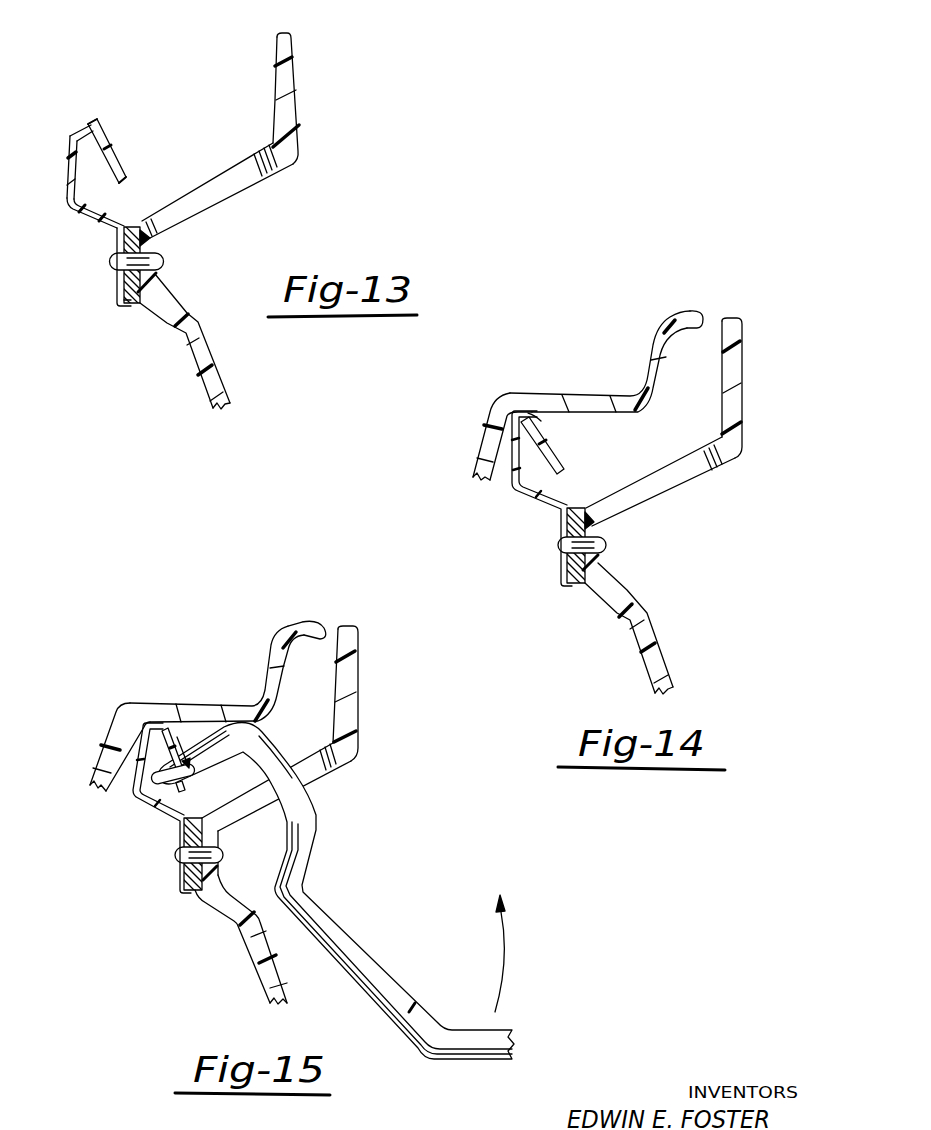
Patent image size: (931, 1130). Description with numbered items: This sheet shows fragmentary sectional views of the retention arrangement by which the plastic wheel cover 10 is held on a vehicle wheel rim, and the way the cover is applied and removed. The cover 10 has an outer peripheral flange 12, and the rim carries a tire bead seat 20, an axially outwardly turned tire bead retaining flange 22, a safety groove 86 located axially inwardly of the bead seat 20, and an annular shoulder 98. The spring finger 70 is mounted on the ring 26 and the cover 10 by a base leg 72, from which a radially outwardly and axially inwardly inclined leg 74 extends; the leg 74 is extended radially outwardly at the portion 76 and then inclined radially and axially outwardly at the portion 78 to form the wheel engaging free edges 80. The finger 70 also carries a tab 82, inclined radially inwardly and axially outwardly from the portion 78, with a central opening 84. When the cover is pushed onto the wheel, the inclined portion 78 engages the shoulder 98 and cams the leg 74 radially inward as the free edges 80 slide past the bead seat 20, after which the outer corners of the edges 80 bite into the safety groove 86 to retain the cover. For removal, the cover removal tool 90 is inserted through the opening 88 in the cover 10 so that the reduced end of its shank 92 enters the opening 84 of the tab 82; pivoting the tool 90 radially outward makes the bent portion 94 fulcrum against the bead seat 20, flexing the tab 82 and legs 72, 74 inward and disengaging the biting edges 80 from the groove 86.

In FIG. 13, the wheel cover 10 is at (246, 221).
In FIG. 15, the wheel cover 10 is at (293, 817).
In FIG. 13, the outer peripheral flange 12 is at (297, 65).
In FIG. 14, the outer peripheral flange 12 is at (742, 373).
In FIG. 15, the outer peripheral flange 12 is at (359, 690).
In FIG. 15, the tire bead seat 20 is at (226, 686).
In FIG. 14, the tire bead retaining flange 22 is at (690, 312).
In FIG. 15, the tire bead retaining flange 22 is at (303, 623).
In FIG. 13, the ring 26 is at (145, 242).
In FIG. 14, the ring 26 is at (588, 530).
In FIG. 15, the ring 26 is at (203, 843).
In FIG. 14, the spring finger 70 is at (542, 507).
In FIG. 13, the base leg 72 is at (120, 287).
In FIG. 13, the inclined leg 74 is at (93, 222).
In FIG. 13, the radially outward extension 76 is at (67, 178).
In FIG. 13, the inclined portion 78 is at (80, 128).
In FIG. 13, the free edges 80 is at (90, 127).
In FIG. 14, the free edges 80 is at (544, 417).
In FIG. 15, the free edges 80 is at (202, 690).
In FIG. 13, the tab 82 is at (125, 182).
In FIG. 13, the central opening 84 is at (137, 128).
In FIG. 14, the central opening 84 is at (559, 452).
In FIG. 14, the safety groove 86 is at (530, 408).
In FIG. 15, the safety groove 86 is at (138, 717).
In FIG. 14, the opening 88 is at (673, 472).
In FIG. 15, the opening 88 is at (318, 771).
In FIG. 15, the cover removal tool 90 is at (414, 1008).
In FIG. 15, the shank 92 is at (336, 875).
In FIG. 15, the bent portion 94 is at (258, 731).
In FIG. 15, the annular shoulder 98 is at (250, 705).